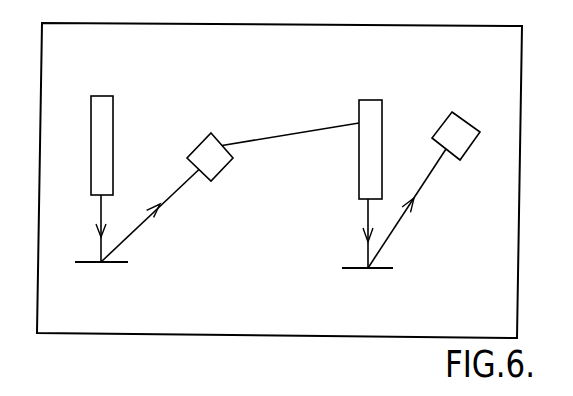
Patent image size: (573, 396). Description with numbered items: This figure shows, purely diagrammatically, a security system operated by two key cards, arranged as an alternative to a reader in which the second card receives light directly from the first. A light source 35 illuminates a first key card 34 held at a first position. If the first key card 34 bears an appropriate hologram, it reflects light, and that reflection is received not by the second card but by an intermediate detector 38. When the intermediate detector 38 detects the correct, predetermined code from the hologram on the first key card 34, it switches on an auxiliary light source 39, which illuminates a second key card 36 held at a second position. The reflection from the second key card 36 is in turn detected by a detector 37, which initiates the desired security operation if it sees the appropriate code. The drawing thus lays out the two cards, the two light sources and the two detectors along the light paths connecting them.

The first key card 34 is at (90, 266).
The light source 35 is at (101, 113).
The second key card 36 is at (376, 270).
The detector 37 is at (460, 130).
The intermediate detector 38 is at (212, 148).
The auxiliary light source 39 is at (377, 107).